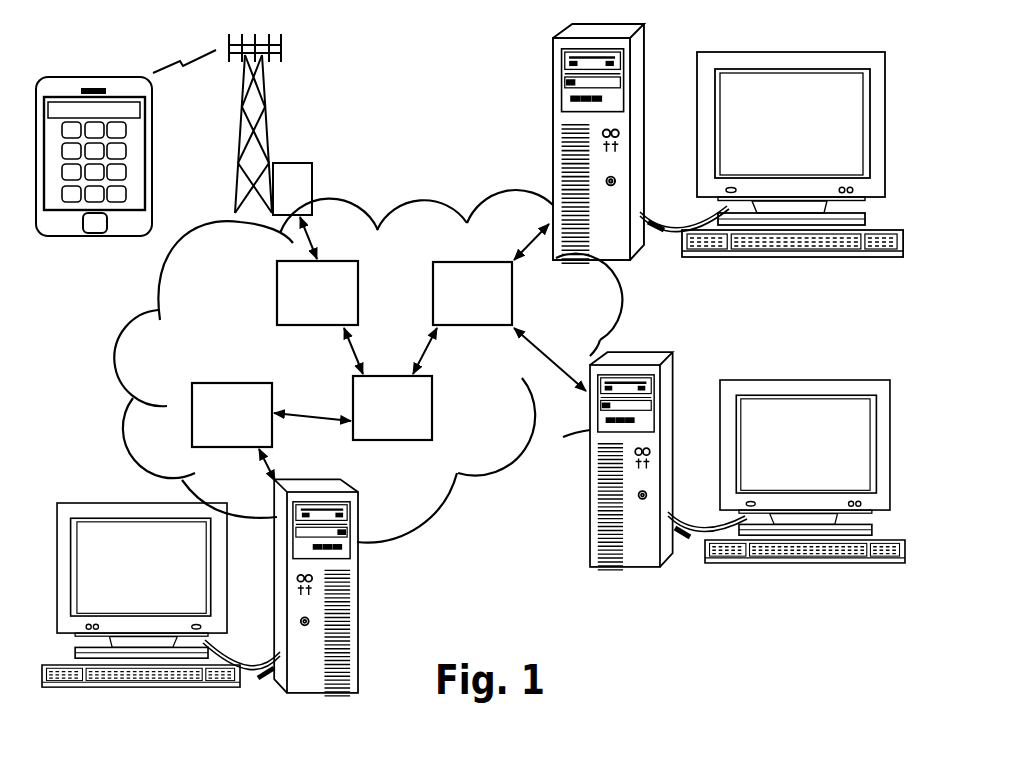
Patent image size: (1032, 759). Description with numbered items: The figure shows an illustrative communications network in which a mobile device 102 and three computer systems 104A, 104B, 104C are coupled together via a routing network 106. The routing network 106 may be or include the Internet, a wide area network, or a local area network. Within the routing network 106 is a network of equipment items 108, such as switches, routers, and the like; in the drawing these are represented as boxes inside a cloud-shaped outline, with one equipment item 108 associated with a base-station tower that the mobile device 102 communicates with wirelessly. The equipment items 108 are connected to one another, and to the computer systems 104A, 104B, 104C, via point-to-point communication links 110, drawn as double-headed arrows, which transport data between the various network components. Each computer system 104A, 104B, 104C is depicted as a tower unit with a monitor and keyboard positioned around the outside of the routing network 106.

The mobile device 102 is at (126, 158).
The computer system 104A is at (642, 77).
The computer system 104B is at (672, 402).
The computer system 104C is at (355, 647).
The routing network 106 is at (498, 453).
The equipment item 108 is at (313, 192).
The point-to-point communication link 110 is at (533, 349).